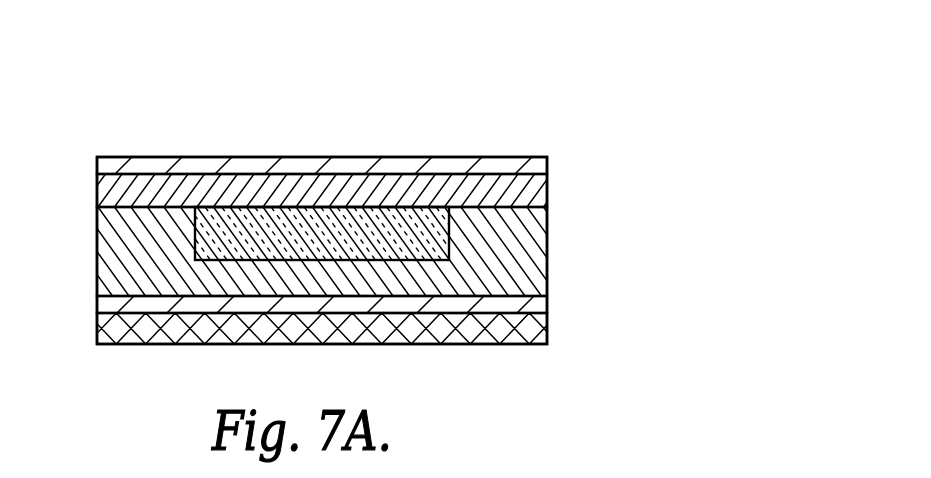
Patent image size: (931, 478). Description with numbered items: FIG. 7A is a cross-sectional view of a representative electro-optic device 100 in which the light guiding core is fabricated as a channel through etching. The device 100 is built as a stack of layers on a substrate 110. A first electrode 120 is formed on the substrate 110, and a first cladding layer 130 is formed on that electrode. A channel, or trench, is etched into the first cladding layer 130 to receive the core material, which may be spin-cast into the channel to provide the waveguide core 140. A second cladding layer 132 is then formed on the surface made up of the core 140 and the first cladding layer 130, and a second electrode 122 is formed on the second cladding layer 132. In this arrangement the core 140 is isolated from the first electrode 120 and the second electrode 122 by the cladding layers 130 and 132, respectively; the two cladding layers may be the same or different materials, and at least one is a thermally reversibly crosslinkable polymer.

The electro-optic device 100 is at (521, 91).
The substrate 110 is at (547, 332).
The first electrode 120 is at (547, 307).
The second electrode 122 is at (547, 163).
The first cladding layer 130 is at (547, 250).
The second cladding layer 132 is at (547, 195).
The core 140 is at (195, 225).